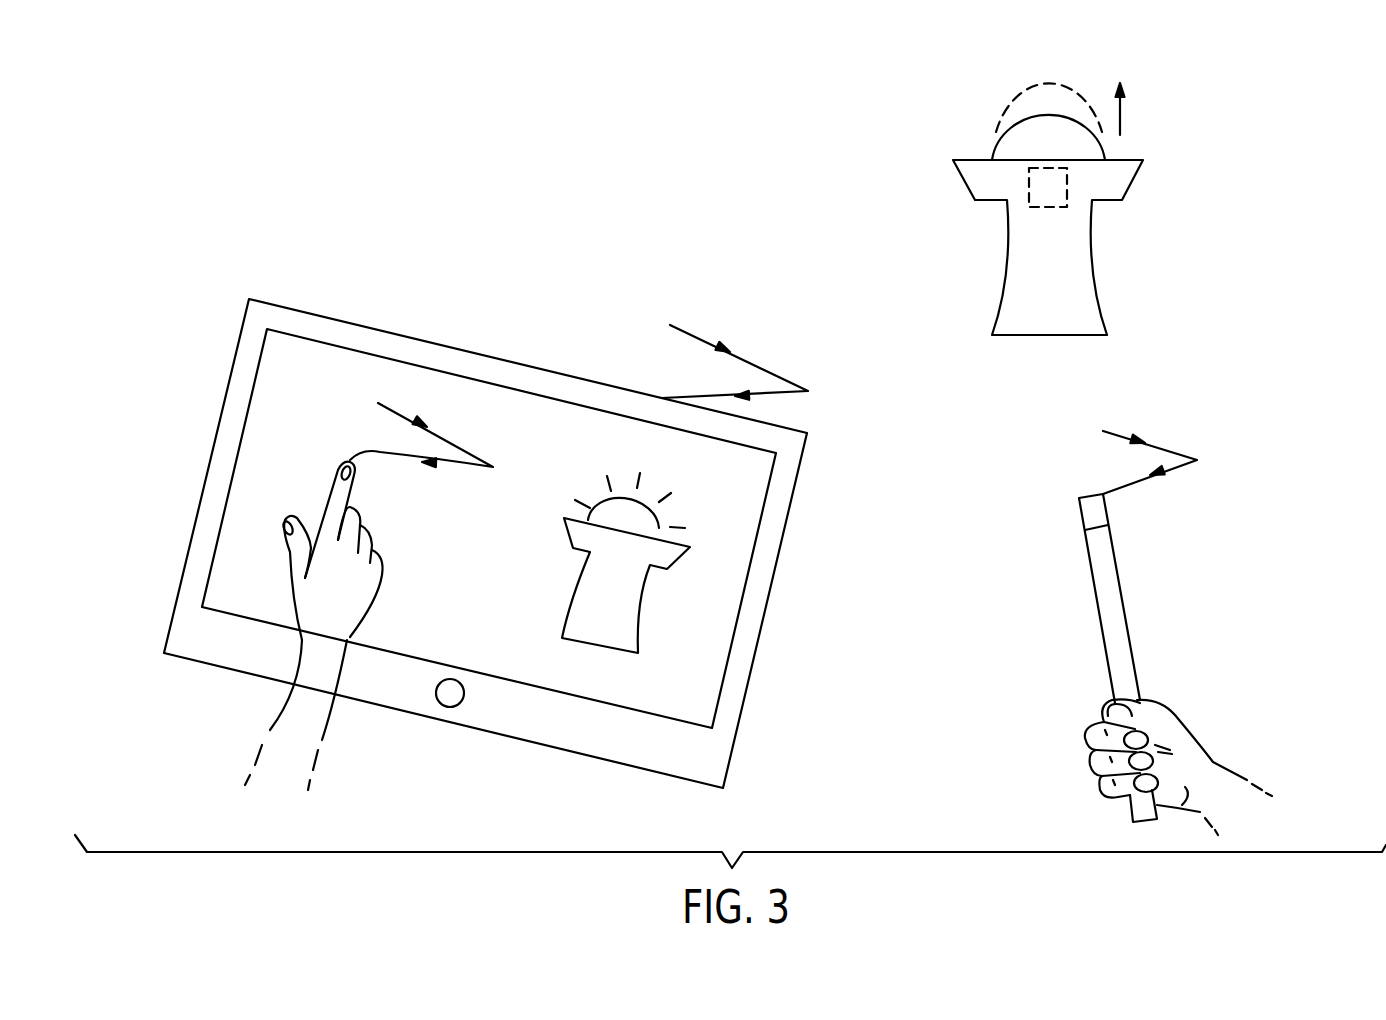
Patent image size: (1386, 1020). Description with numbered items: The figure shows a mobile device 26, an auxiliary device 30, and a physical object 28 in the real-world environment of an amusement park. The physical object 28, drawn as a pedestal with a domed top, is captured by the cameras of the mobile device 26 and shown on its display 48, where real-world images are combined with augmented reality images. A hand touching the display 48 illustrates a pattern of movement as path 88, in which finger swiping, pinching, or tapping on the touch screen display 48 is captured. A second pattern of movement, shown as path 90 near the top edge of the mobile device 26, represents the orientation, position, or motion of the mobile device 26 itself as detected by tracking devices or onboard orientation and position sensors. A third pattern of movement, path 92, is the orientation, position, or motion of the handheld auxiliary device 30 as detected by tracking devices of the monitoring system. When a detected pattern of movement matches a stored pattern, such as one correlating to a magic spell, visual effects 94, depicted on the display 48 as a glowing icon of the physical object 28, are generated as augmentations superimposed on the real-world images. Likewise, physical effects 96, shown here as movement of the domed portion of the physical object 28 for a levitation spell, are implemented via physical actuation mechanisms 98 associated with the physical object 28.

The mobile device 26 is at (195, 322).
The display 48 is at (745, 590).
The path 88 is at (465, 445).
The path 90 is at (772, 373).
The path 92 is at (1182, 455).
The visual effects 94 is at (702, 499).
The physical object 28 is at (1230, 102).
The physical effects 96 is at (1120, 113).
The physical actuation mechanisms 98 is at (1047, 193).
The auxiliary device 30 is at (1232, 668).